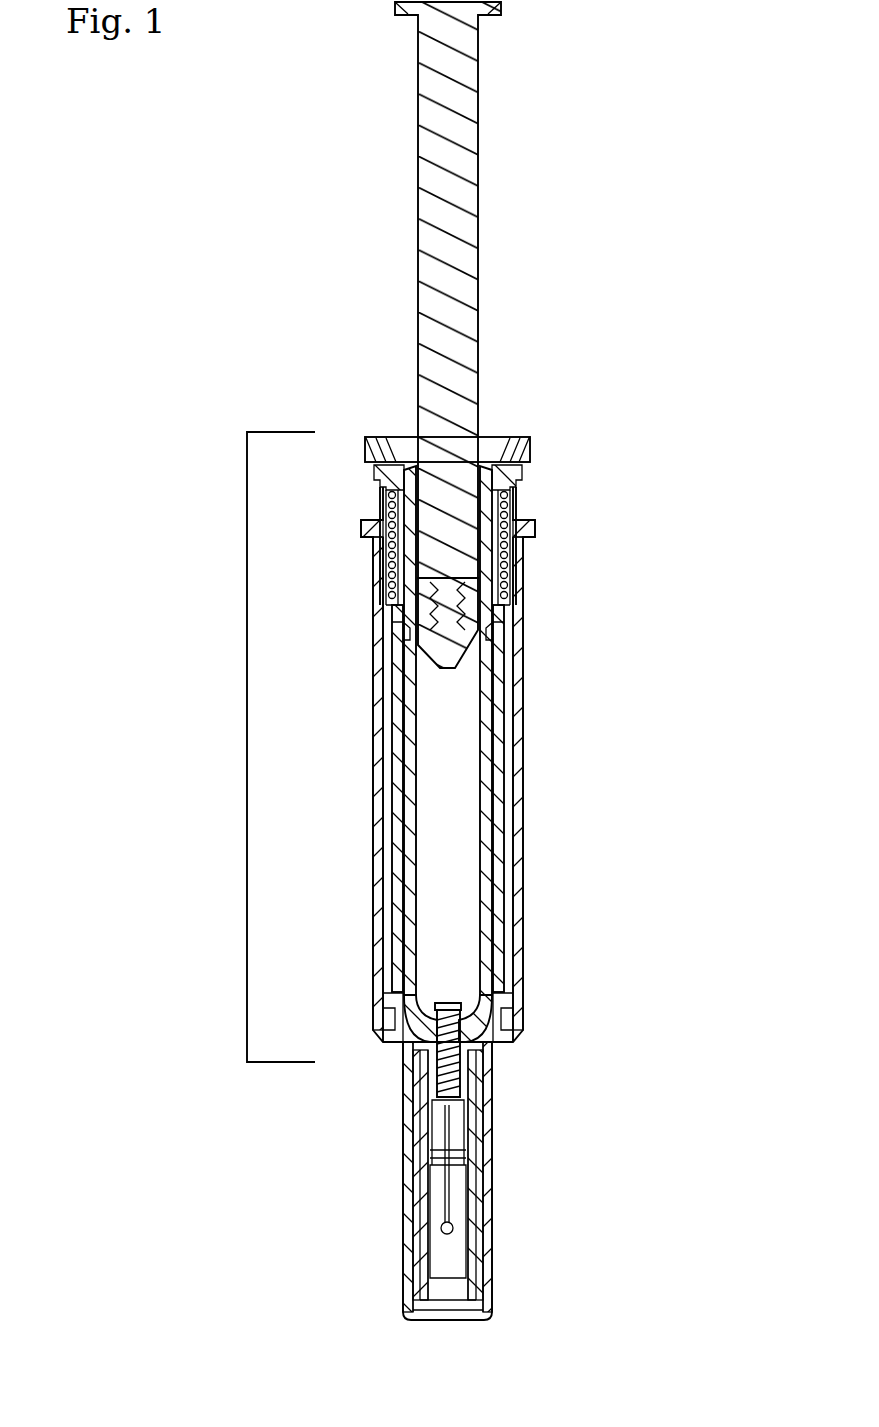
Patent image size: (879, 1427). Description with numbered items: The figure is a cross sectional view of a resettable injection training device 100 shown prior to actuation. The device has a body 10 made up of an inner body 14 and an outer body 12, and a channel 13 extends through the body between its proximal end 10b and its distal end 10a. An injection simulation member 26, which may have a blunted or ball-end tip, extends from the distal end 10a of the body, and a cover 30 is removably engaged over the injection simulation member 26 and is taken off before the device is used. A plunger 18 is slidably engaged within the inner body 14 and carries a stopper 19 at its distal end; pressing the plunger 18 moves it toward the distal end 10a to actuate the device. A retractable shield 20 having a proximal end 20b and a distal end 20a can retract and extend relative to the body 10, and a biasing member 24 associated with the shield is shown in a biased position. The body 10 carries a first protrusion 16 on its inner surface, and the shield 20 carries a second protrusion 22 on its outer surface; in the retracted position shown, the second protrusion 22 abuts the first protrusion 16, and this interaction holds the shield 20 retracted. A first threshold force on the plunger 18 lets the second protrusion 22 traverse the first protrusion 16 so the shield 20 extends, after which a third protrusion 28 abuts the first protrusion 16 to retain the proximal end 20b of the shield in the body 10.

The resettable injection training device 100 is at (719, 60).
The body 10 is at (247, 738).
The distal end of the body 10a is at (373, 1050).
The proximal end of the body 10b is at (543, 437).
The outer body 12 is at (518, 792).
The channel 13 is at (438, 817).
The inner body 14 is at (485, 868).
The first protrusion 16 is at (508, 1003).
The plunger 18 is at (470, 157).
The stopper 19 is at (465, 648).
The retractable shield 20 is at (502, 727).
The distal end of the shield 20a is at (500, 1040).
The proximal end of the shield 20b is at (495, 618).
The second protrusion 22 is at (508, 993).
The biasing member 24 is at (512, 508).
The injection simulation member 26 is at (447, 1208).
The third protrusion 28 is at (510, 628).
The cover 30 is at (490, 1278).